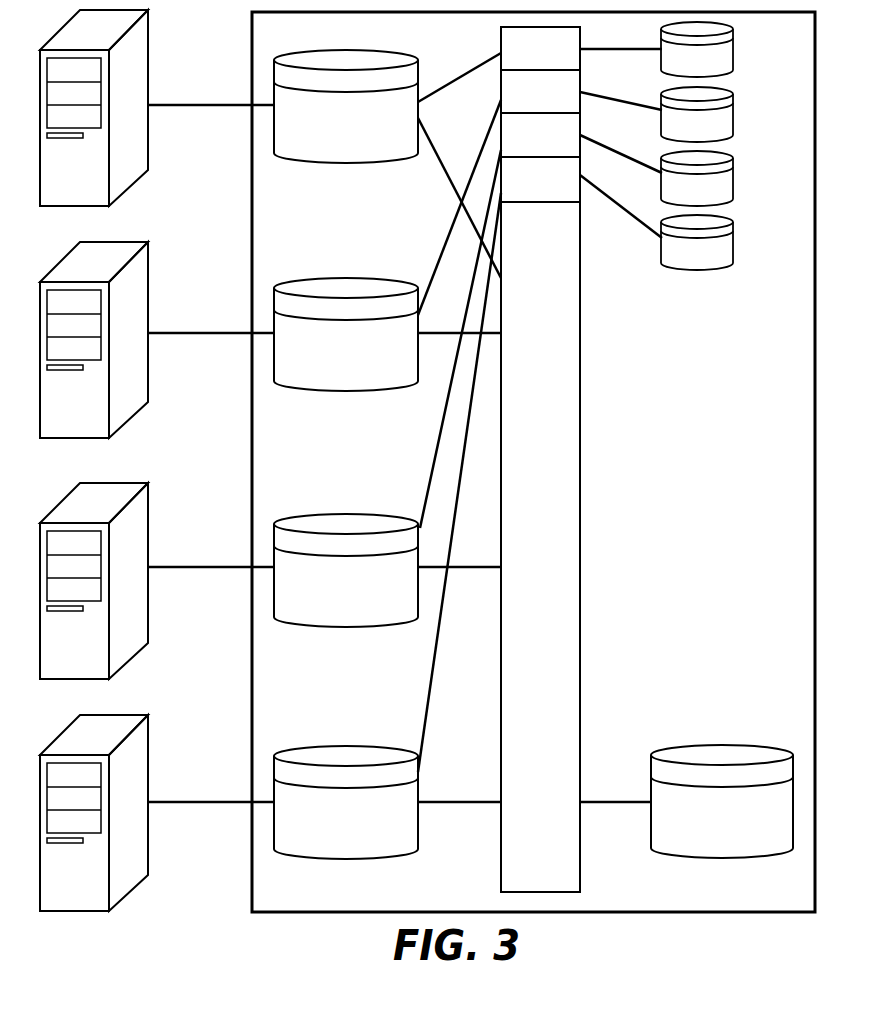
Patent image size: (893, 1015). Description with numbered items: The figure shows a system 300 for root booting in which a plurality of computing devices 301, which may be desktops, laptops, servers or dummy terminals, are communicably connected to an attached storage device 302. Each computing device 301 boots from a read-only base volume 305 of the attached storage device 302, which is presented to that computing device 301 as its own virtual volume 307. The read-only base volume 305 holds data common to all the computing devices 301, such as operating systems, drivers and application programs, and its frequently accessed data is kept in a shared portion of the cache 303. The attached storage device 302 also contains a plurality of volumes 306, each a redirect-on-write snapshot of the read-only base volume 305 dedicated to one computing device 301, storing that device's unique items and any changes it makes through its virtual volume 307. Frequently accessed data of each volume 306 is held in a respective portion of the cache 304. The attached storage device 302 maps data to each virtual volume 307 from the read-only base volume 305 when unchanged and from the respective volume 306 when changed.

The system for root booting 300 is at (720, 947).
The computing device 301 is at (150, 82).
The attached storage device 302 is at (605, 914).
The cache 303 is at (583, 560).
The cache 304 is at (582, 60).
The read-only base volume 305 is at (722, 745).
The volume 306 is at (735, 40).
The virtual volume 307 is at (345, 50).